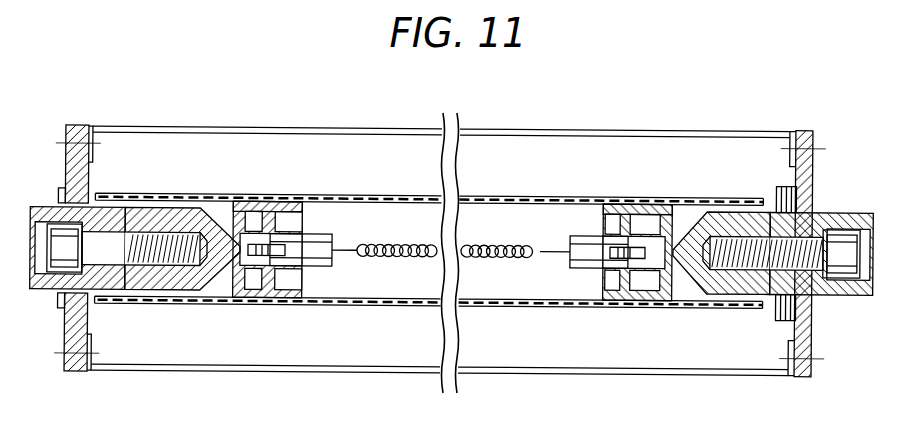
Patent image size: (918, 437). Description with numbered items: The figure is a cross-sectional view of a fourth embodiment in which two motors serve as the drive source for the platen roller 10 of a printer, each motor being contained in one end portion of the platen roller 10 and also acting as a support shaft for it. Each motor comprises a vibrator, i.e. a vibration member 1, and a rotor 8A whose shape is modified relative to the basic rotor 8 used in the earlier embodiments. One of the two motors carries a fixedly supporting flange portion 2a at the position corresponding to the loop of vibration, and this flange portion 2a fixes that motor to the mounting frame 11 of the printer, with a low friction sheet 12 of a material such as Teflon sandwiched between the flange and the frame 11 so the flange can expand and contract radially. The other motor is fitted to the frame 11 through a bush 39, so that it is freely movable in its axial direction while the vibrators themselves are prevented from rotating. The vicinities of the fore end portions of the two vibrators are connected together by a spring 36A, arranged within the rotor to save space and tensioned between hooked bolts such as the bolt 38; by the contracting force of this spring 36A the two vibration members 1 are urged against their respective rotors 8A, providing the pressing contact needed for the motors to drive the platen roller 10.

The vibration member 1 is at (200, 282).
The mounting flange portion 2a is at (778, 317).
The rotor 8 is at (268, 297).
The rotor 8A is at (630, 303).
The platen roller 10 is at (527, 307).
The mounting frame 11 is at (810, 372).
The low friction sheet 12 is at (775, 310).
The spring 36A is at (392, 257).
The bolt 38 is at (262, 197).
The bush 39 is at (60, 297).